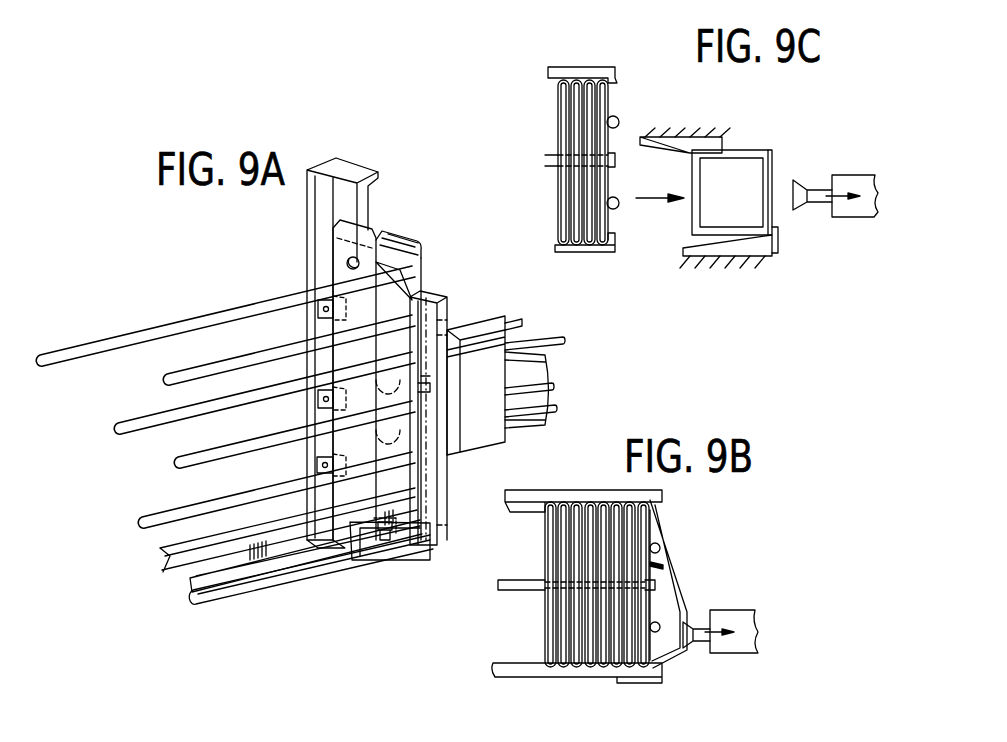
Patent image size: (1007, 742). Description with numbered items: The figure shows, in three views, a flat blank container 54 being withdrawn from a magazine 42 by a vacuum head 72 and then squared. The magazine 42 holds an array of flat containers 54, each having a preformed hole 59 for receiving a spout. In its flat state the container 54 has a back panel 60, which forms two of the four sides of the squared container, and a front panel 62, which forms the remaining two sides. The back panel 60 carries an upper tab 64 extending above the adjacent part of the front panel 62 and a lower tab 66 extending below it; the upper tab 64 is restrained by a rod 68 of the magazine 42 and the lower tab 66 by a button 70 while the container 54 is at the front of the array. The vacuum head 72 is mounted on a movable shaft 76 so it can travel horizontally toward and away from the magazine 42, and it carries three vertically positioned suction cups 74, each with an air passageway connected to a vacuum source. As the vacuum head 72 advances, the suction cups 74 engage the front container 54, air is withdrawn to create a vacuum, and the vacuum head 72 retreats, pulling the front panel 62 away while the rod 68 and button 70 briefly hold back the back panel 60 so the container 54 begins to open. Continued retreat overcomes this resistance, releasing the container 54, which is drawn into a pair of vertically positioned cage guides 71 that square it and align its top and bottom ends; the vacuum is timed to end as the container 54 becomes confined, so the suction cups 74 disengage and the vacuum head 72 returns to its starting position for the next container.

In FIG. 9A, the magazine 42 is at (230, 303).
In FIG. 9C, the magazine 42 is at (570, 66).
In FIG. 9B, the magazine 42 is at (583, 493).
In FIG. 9A, the container 54 is at (420, 270).
In FIG. 9C, the container 54 is at (773, 145).
In FIG. 9A, the preformed hole 59 is at (382, 250).
In FIG. 9B, the back panel 60 is at (662, 563).
In FIG. 9B, the front panel 62 is at (677, 594).
In FIG. 9A, the upper tab 64 is at (330, 232).
In FIG. 9B, the upper tab 64 is at (648, 527).
In FIG. 9A, the lower tab 66 is at (402, 520).
In FIG. 9A, the rod 68 is at (368, 198).
In FIG. 9C, the rod 68 is at (618, 118).
In FIG. 9B, the rod 68 is at (660, 547).
In FIG. 9A, the button 70 is at (385, 525).
In FIG. 9C, the button 70 is at (618, 210).
In FIG. 9B, the button 70 is at (662, 627).
In FIG. 9C, the cage guides 71 is at (690, 137).
In FIG. 9A, the vacuum head 72 is at (433, 295).
In FIG. 9C, the vacuum head 72 is at (867, 210).
In FIG. 9B, the vacuum head 72 is at (758, 617).
In FIG. 9A, the suction cups 74 is at (428, 388).
In FIG. 9C, the suction cups 74 is at (800, 180).
In FIG. 9B, the suction cups 74 is at (692, 635).
In FIG. 9A, the movable shaft 76 is at (548, 365).